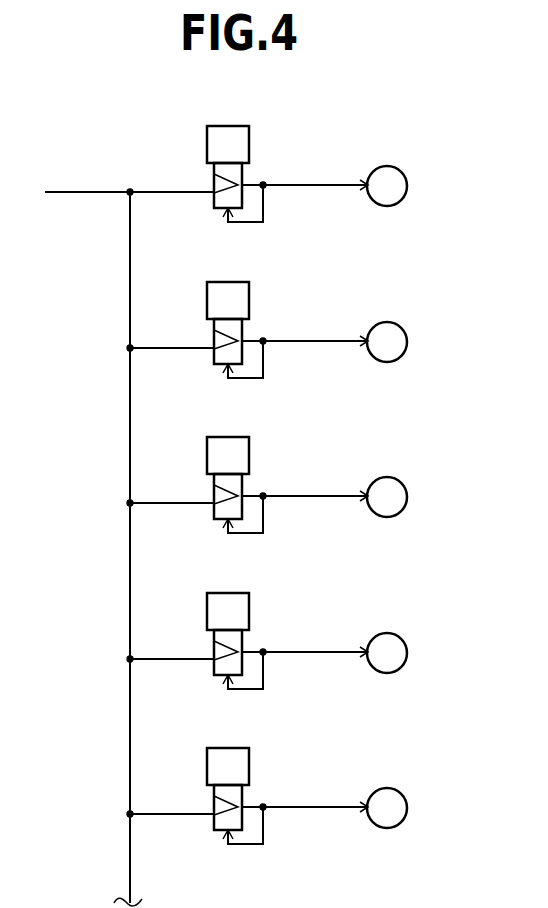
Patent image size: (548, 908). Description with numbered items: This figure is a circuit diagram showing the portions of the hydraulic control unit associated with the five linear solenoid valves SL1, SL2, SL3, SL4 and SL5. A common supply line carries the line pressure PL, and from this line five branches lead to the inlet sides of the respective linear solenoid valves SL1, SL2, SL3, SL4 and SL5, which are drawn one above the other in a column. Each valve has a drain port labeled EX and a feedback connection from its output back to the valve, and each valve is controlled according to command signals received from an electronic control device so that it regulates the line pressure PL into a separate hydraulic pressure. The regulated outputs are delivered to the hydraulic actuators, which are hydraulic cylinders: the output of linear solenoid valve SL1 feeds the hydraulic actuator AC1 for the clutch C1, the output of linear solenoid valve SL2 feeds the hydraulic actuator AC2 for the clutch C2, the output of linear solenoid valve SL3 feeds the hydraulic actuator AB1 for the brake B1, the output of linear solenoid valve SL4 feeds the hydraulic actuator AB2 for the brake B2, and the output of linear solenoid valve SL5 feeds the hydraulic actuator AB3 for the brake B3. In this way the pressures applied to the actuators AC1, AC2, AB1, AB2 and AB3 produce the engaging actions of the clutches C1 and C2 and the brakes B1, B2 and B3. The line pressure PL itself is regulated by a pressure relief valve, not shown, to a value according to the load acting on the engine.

The line pressure PL is at (93, 533).
The linear solenoid valve SL1 is at (211, 172).
The linear solenoid valve SL2 is at (211, 328).
The linear solenoid valve SL3 is at (211, 483).
The linear solenoid valve SL4 is at (211, 639).
The linear solenoid valve SL5 is at (211, 794).
The exclusion / enable input EX is at (211, 178).
The clutch C1 is at (408, 151).
The clutch C2 is at (408, 307).
The brake B1 is at (408, 462).
The brake B2 is at (408, 618).
The brake B3 is at (408, 773).
The hydraulic actuator AC1 is at (342, 173).
The hydraulic actuator AC2 is at (342, 329).
The hydraulic actuator AB1 is at (342, 484).
The hydraulic actuator AB2 is at (342, 640).
The hydraulic actuator AB3 is at (342, 795).